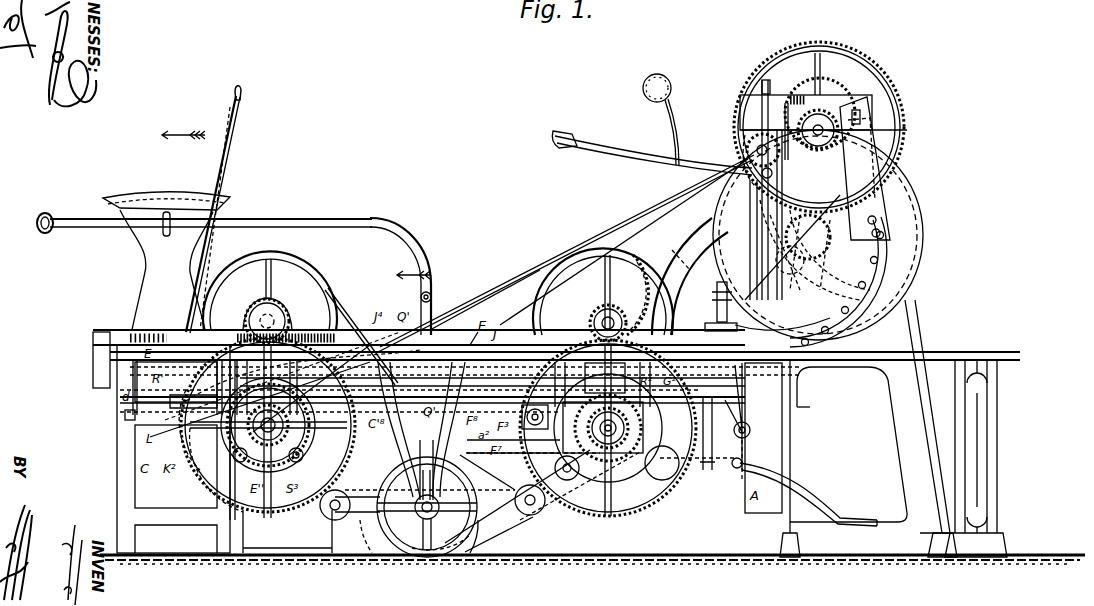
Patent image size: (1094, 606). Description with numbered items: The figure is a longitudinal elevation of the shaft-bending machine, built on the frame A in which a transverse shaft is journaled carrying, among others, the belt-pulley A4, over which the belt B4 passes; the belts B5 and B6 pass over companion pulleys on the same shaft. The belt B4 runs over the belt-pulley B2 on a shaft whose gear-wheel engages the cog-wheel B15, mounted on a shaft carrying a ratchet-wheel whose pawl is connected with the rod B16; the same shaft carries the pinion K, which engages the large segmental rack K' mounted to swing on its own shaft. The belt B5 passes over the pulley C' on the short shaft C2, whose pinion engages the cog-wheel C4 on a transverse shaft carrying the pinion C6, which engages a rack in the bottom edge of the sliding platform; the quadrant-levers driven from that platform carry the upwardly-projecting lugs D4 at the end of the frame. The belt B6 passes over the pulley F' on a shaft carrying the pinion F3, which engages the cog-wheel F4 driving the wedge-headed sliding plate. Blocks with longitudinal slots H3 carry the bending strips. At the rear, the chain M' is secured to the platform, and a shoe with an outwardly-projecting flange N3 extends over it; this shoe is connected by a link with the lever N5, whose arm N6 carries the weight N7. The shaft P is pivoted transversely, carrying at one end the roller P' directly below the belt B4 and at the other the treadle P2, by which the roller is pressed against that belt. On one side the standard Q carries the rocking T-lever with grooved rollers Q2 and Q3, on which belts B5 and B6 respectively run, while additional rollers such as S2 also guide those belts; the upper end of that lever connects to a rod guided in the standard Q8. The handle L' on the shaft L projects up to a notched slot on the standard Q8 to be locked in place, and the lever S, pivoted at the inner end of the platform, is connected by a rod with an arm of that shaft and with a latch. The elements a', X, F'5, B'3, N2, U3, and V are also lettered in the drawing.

The frame A is at (173, 449).
The belt-pulley A4 is at (440, 570).
The table X is at (950, 353).
The upwardly-projecting lug D4 is at (100, 350).
The standard Q8 is at (166, 261).
The grooved roller Q2 is at (234, 369).
The handle L' is at (217, 209).
The direction arrow a' is at (296, 196).
The pulley C' is at (270, 284).
The short shaft C2 is at (280, 312).
The cog-wheel C4 is at (345, 432).
The pinion C6 is at (310, 438).
The grooved roller Q3 is at (538, 510).
The standard Q is at (501, 501).
The pulley F' is at (603, 291).
The pinion F3 is at (615, 298).
The cog-wheel F4 is at (648, 506).
The pinion F'5 is at (602, 412).
The roller P' is at (661, 472).
The additional roller S2 is at (580, 486).
The rod B16 is at (560, 240).
The belt B4 is at (810, 401).
The belt B5 is at (361, 378).
The belt B6 is at (472, 397).
The weight N7 is at (663, 80).
The arm N6 is at (678, 114).
The lever N5 is at (620, 160).
The cog-wheel B15 is at (898, 99).
The belt-pulley B2 is at (918, 248).
The pinion K is at (823, 176).
The pinion B'3 is at (820, 106).
The longitudinal slot H3 is at (882, 134).
The gear segment N2 is at (761, 187).
The gear U3 is at (791, 247).
The segmental rack K' is at (690, 276).
The chain M' is at (837, 282).
The flange N3 is at (815, 250).
The bracket V is at (713, 305).
The treadle P2 is at (830, 512).
The lever S is at (747, 416).
The shaft P is at (710, 459).